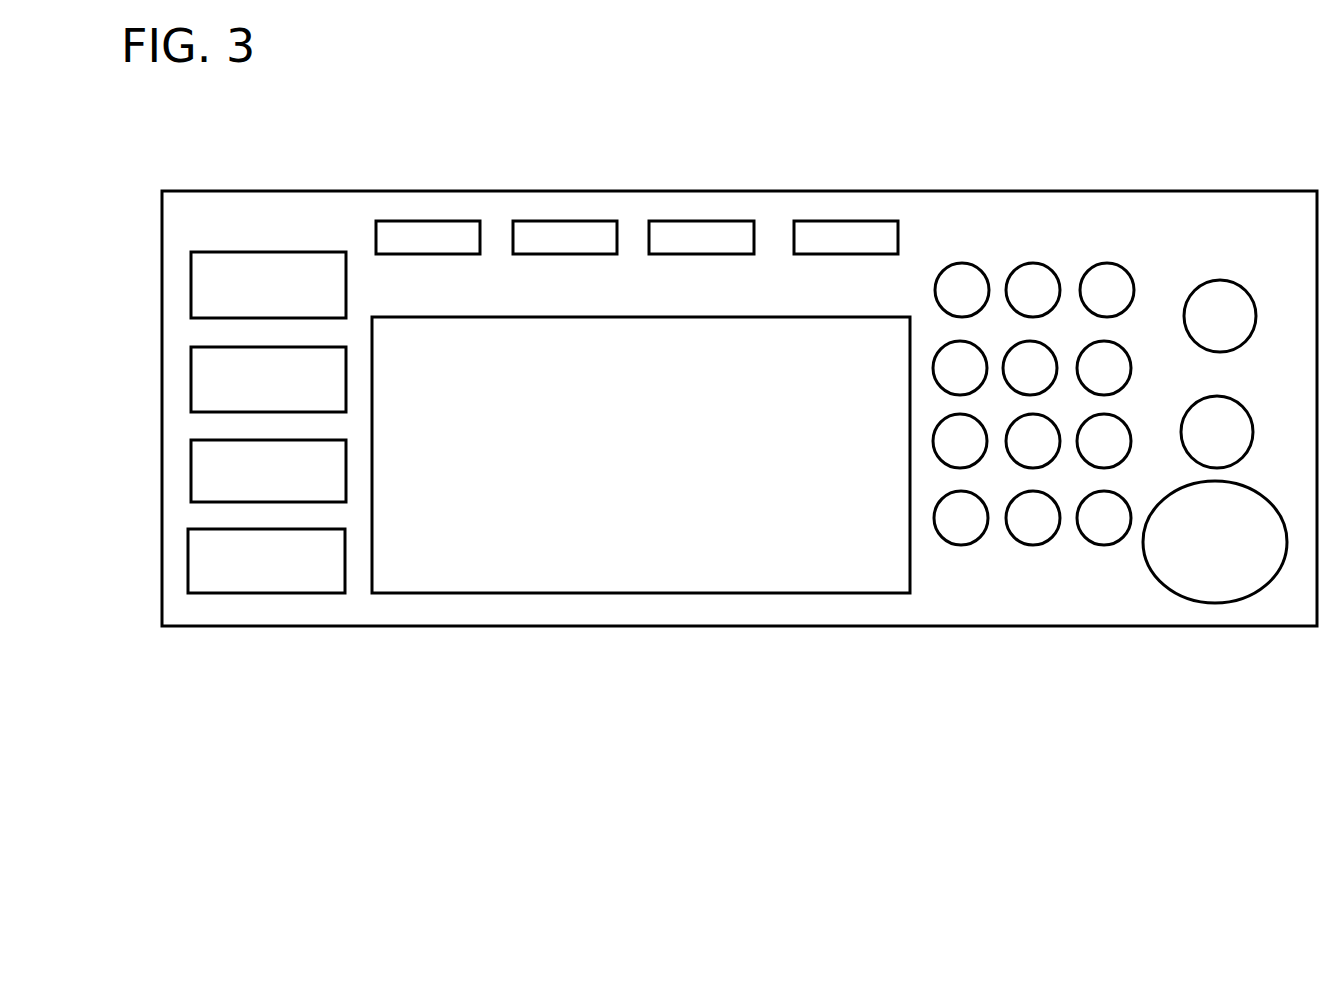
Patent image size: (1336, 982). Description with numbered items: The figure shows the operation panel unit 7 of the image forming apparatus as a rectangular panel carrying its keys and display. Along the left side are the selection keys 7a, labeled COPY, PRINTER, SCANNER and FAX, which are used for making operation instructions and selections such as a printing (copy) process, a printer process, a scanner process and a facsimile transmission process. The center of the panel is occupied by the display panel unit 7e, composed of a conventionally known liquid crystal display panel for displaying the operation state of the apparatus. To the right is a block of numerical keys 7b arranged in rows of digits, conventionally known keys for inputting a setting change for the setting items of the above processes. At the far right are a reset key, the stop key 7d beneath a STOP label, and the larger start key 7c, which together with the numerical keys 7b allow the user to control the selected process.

The operation panel unit 7 is at (563, 170).
The selection keys 7a is at (220, 580).
The numerical keys 7b is at (1047, 537).
The start key 7c is at (1177, 578).
The stop key 7d is at (1244, 420).
The display panel unit 7e is at (507, 540).